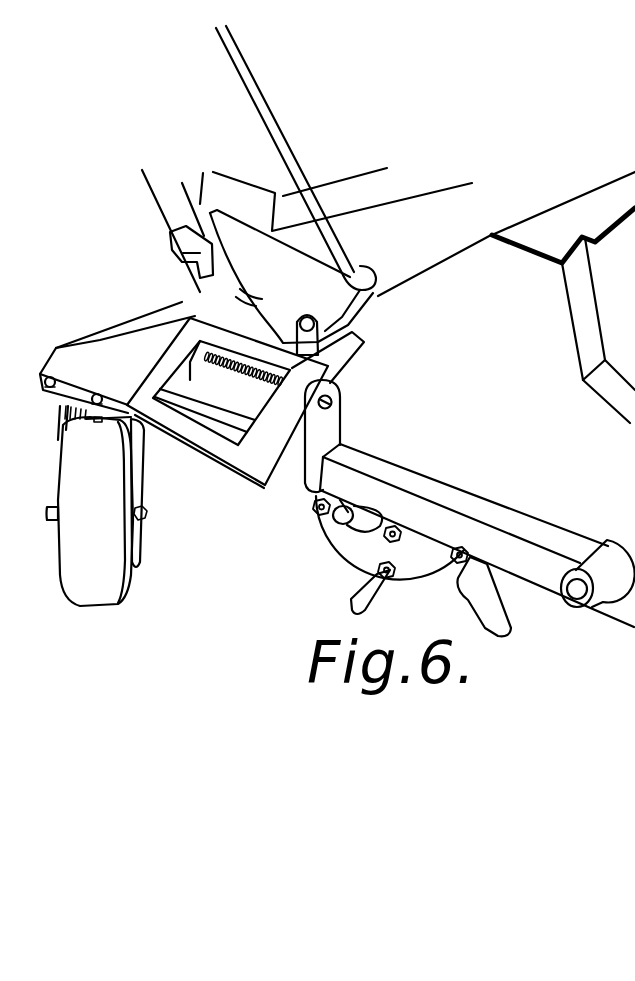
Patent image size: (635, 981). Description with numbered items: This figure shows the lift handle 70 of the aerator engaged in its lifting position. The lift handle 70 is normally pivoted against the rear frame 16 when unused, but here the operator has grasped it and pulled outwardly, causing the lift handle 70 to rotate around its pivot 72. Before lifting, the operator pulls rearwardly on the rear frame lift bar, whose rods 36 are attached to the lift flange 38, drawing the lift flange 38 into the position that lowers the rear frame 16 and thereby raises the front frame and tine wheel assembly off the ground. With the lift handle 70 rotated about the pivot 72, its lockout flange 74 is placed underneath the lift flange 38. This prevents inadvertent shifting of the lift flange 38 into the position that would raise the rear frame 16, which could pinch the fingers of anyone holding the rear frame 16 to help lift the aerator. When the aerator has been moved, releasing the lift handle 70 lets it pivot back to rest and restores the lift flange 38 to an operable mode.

The rear frame 16 is at (100, 340).
The rods 36 is at (247, 67).
The lift flange 38 is at (357, 302).
The lift handle 70 is at (224, 460).
The pivot 72 is at (338, 402).
The lockout flange 74 is at (345, 357).